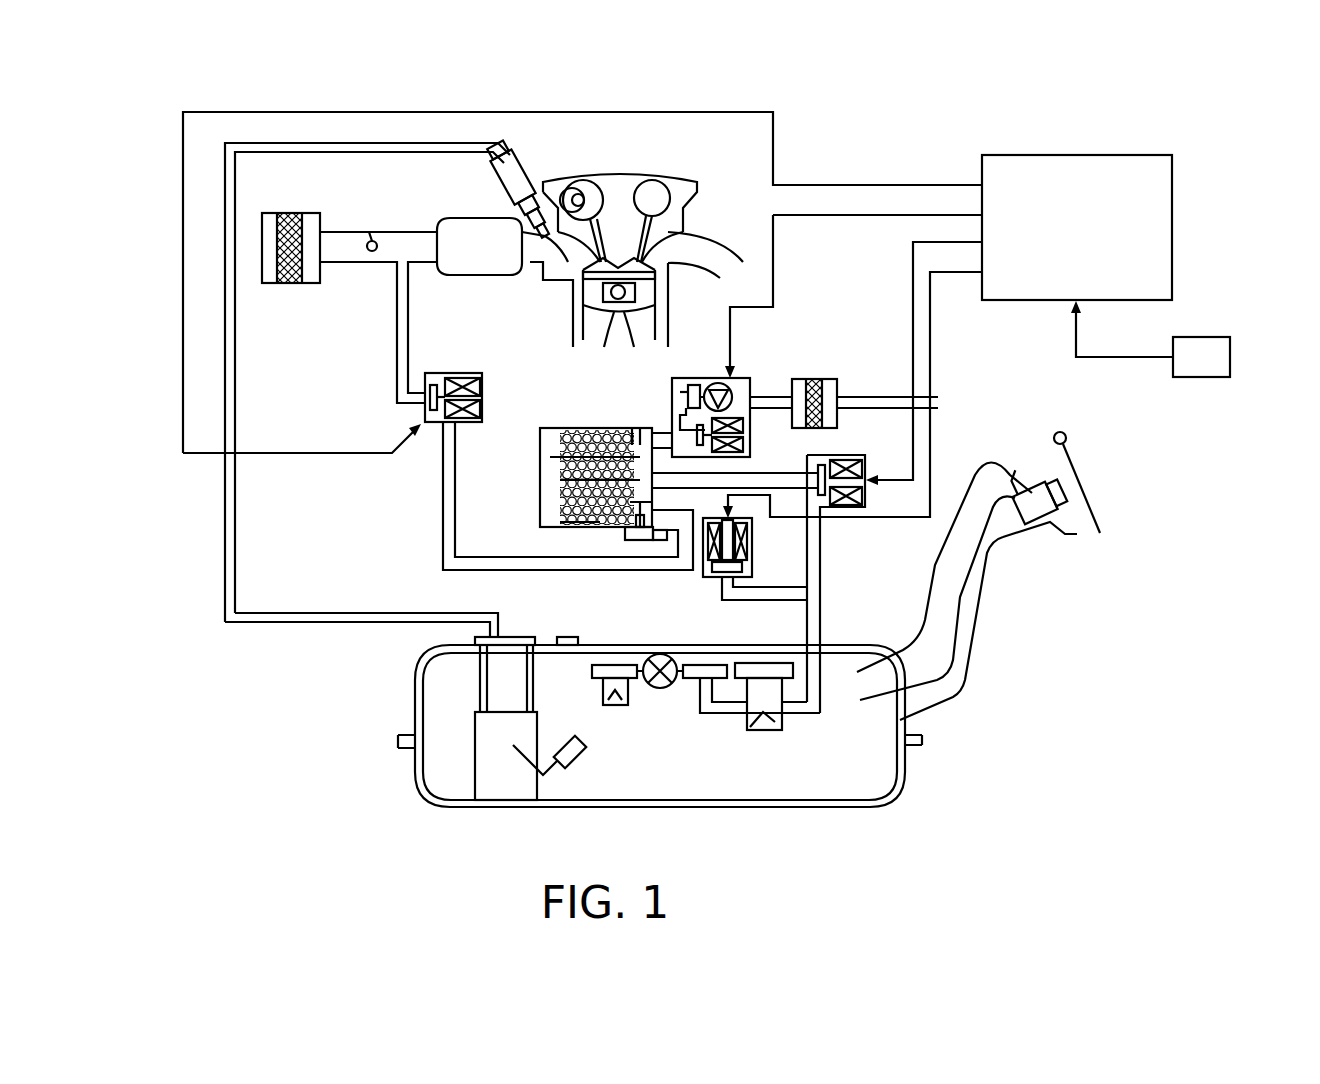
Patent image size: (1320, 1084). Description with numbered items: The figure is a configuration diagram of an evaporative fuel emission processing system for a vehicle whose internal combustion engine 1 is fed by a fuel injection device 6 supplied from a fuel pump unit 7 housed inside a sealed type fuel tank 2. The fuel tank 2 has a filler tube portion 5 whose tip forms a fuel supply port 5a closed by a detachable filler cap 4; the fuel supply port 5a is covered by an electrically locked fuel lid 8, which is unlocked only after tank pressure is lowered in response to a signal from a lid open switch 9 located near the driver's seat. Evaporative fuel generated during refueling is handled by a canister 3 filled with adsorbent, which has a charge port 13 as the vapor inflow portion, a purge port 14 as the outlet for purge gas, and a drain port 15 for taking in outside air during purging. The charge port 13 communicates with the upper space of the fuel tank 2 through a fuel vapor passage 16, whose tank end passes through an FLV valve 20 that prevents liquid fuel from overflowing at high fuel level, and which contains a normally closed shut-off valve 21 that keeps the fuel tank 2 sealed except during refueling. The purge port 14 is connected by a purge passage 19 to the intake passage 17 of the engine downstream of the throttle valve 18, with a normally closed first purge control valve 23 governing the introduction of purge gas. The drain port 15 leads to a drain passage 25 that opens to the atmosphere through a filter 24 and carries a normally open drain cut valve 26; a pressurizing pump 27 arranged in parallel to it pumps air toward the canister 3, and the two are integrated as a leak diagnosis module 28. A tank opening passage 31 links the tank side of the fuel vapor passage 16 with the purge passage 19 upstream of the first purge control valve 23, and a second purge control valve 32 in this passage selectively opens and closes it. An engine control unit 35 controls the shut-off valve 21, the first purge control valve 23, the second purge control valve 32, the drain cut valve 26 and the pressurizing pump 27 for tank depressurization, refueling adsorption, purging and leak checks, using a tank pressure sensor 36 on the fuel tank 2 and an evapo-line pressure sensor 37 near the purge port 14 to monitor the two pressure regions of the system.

The internal combustion engine 1 is at (657, 166).
The fuel tank 2 is at (808, 800).
The canister 3 is at (552, 428).
The filler cap 4 is at (1033, 485).
The filler tube portion 5 is at (972, 650).
The fuel supply port 5a is at (1005, 540).
The fuel injection device 6 is at (528, 186).
The fuel pump unit 7 is at (490, 792).
The fuel lid 8 is at (1097, 511).
The lid open switch 9 is at (1230, 357).
The charge port 13 is at (640, 481).
The purge port 14 is at (560, 524).
The drain port 15 is at (640, 440).
The fuel vapor passage 16 is at (822, 600).
The intake passage 17 is at (483, 240).
The throttle valve 18 is at (376, 236).
The purge passage 19 is at (443, 500).
The FLV valve 20 is at (763, 720).
The shut-off valve 21 is at (870, 460).
The first purge control valve 23 is at (455, 373).
The filter 24 is at (814, 380).
The drain passage 25 is at (778, 395).
The drain cut valve 26 is at (750, 445).
The pressurizing pump 27 is at (712, 384).
The leak diagnosis module 28 is at (745, 378).
The tank opening passage 31 is at (768, 600).
The second purge control valve 32 is at (752, 540).
The engine control unit 35 is at (1071, 158).
The tank pressure sensor 36 is at (567, 637).
The evapo-line pressure sensor 37 is at (640, 540).